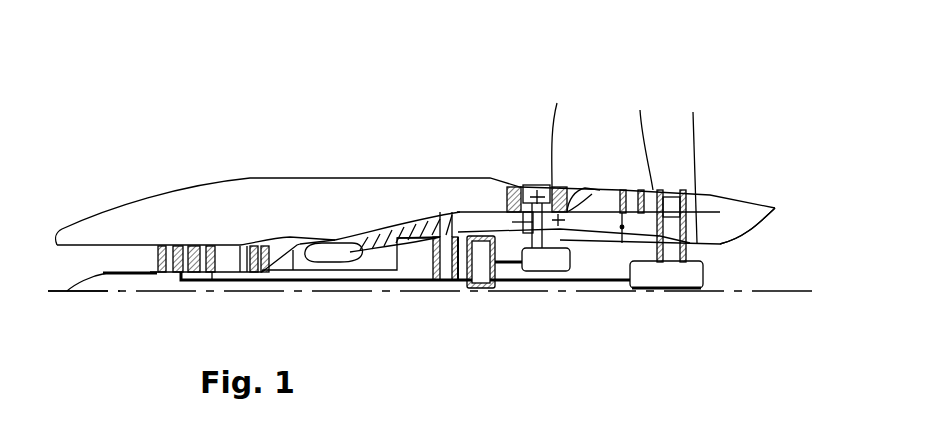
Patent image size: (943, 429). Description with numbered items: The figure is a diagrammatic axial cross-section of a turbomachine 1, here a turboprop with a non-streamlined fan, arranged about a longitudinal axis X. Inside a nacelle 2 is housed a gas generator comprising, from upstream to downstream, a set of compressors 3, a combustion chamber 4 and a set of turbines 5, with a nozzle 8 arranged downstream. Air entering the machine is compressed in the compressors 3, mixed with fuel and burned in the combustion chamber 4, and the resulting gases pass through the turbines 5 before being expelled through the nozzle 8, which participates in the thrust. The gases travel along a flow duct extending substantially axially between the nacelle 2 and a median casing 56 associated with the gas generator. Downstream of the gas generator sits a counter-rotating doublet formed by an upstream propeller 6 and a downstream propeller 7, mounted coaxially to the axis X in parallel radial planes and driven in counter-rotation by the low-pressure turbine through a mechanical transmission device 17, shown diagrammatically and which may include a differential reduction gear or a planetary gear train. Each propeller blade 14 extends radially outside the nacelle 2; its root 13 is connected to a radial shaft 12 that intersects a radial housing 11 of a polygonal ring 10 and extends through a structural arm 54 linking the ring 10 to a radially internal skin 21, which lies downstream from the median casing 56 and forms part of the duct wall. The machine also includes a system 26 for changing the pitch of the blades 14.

The turbomachine 1 is at (158, 151).
The nacelle 2 is at (292, 188).
The set of compressors 3 is at (248, 224).
The combustion chamber 4 is at (339, 249).
The set of turbines 5 is at (378, 228).
The median casing 56 is at (395, 230).
The upstream propeller 6 is at (540, 95).
The downstream propeller 7 is at (669, 111).
The nozzle 8 is at (776, 229).
The polygonal ring 10 is at (509, 198).
The radial housing 11 is at (565, 210).
The radial shaft 12 is at (510, 218).
The root 13 is at (560, 203).
The blade 14 is at (513, 195).
The mechanical transmission device 17 is at (478, 268).
The radially internal skin 21 is at (622, 193).
The system for changing the pitch of the blades 26 is at (547, 258).
The structural arm 54 is at (563, 222).
The longitudinal axis X is at (117, 293).